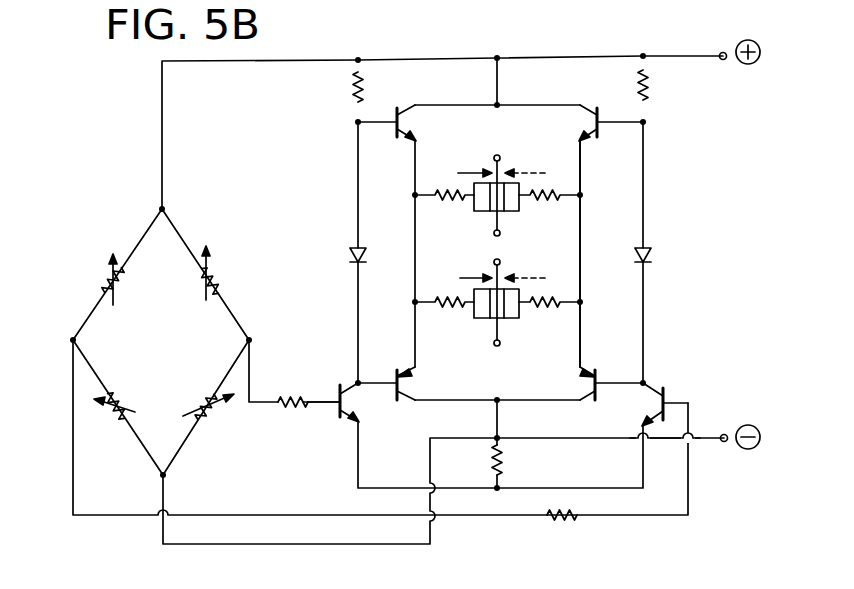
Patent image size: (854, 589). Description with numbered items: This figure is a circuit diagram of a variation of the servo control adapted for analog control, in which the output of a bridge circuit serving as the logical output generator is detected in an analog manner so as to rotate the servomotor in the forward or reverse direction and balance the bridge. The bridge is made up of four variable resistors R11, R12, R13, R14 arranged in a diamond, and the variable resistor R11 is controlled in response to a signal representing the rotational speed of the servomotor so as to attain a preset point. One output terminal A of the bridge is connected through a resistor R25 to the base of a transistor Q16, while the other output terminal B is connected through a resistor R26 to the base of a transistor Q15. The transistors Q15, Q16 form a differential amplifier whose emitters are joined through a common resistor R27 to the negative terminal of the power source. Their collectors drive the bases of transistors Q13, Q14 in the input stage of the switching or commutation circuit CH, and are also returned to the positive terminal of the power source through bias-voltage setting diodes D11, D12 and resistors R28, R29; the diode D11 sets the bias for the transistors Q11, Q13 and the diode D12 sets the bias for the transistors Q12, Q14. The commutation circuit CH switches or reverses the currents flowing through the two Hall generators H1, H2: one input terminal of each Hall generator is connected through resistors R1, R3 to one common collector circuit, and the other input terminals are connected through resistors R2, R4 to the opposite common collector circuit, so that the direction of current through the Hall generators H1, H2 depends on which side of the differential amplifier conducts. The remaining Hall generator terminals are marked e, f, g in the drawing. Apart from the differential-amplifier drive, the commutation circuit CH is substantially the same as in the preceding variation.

The variable resistor R11 is at (104, 278).
The variable resistor R12 is at (114, 413).
The variable resistor R13 is at (217, 413).
The variable resistor R14 is at (222, 278).
The output terminal A is at (107, 351).
The output terminal B is at (240, 351).
The resistor R25 is at (563, 519).
The resistor R26 is at (295, 399).
The resistor R27 is at (503, 462).
The resistor R28 is at (353, 88).
The resistor R29 is at (649, 87).
The resistor R1 is at (447, 200).
The resistor R2 is at (545, 200).
The resistor R3 is at (447, 307).
The resistor R4 is at (545, 307).
The Hall generator H1 is at (504, 178).
The Hall generator H2 is at (504, 276).
The Hall element terminal e is at (489, 147).
The Hall element terminal f is at (481, 235).
The Hall element terminal g is at (482, 258).
The switching or commutation circuit CH is at (583, 218).
The transistor Q11 is at (410, 124).
The transistor Q12 is at (587, 123).
The transistor Q13 is at (401, 383).
The transistor Q14 is at (588, 383).
The transistor Q15 is at (350, 408).
The transistor Q16 is at (654, 404).
The bias-voltage setting diode D11 is at (351, 254).
The bias-voltage setting diode D12 is at (650, 252).